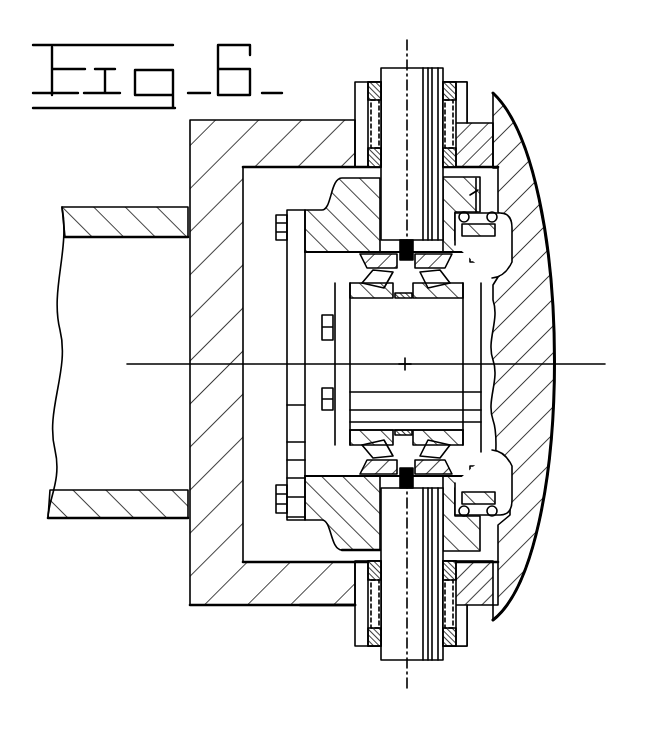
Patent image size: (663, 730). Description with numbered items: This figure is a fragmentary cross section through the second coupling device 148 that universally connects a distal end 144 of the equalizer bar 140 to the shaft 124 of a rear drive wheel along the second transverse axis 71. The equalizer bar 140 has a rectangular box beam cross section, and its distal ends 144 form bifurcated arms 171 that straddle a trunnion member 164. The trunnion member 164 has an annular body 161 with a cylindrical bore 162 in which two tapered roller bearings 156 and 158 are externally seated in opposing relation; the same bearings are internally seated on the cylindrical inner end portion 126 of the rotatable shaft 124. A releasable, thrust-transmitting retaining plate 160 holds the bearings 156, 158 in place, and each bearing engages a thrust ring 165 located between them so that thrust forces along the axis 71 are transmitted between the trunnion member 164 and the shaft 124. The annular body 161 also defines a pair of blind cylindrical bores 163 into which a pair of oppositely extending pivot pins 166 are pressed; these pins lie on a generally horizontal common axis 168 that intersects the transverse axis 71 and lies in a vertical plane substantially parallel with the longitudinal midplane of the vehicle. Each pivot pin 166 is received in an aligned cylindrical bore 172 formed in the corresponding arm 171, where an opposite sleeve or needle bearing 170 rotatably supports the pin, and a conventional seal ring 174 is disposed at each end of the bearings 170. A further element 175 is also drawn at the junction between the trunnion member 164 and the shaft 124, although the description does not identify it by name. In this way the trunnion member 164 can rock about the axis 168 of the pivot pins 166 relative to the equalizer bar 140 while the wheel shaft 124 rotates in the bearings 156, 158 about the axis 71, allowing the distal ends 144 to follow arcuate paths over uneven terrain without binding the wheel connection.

The second transverse axis 71 is at (158, 362).
The shaft 124 is at (530, 538).
The cylindrical inner end portion 126 is at (420, 351).
The equalizer bar 140 is at (133, 524).
The distal ends 144 is at (200, 560).
The second coupling device 148 is at (327, 612).
The tapered roller bearing 156 is at (391, 298).
The tapered roller bearing 158 is at (420, 298).
The retaining plate 160 is at (320, 421).
The annular body 161 is at (470, 195).
The cylindrical bore 162 is at (472, 490).
The blind cylindrical bores 163 is at (385, 198).
The trunnion member 164 is at (334, 527).
The thrust ring 165 is at (378, 452).
The pivot pins 166 is at (393, 75).
The common axis 168 is at (410, 62).
The needle bearings 170 is at (450, 150).
The bifurcated arms 171 is at (455, 95).
The cylindrical bores 172 is at (370, 128).
The seal ring 174 is at (452, 153).
The seal 175 is at (497, 240).